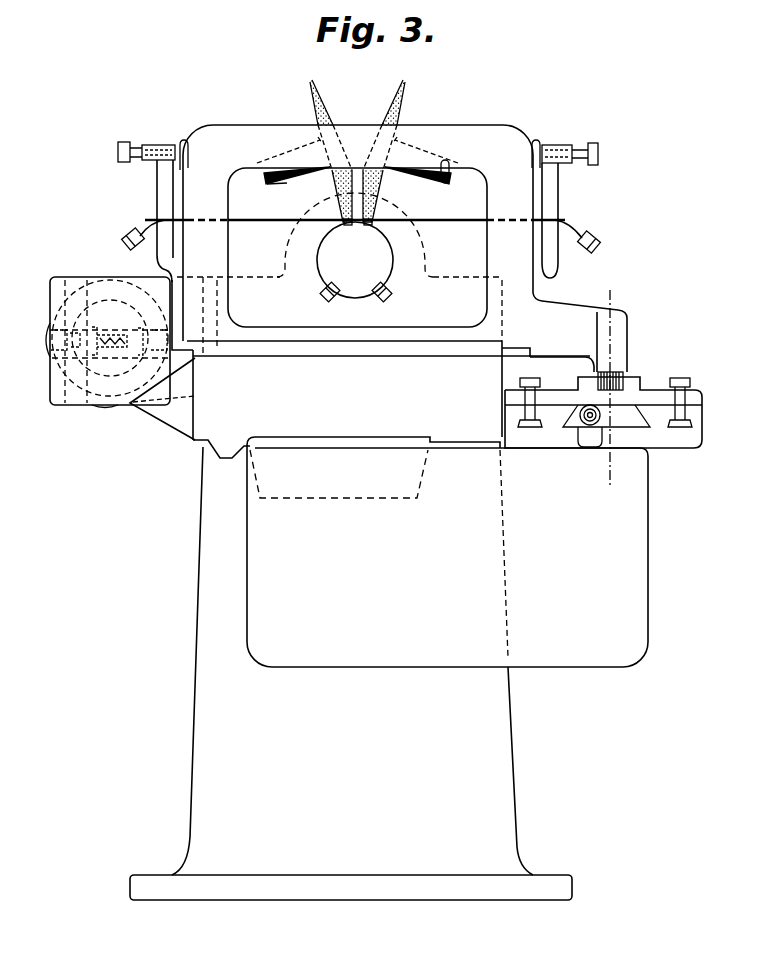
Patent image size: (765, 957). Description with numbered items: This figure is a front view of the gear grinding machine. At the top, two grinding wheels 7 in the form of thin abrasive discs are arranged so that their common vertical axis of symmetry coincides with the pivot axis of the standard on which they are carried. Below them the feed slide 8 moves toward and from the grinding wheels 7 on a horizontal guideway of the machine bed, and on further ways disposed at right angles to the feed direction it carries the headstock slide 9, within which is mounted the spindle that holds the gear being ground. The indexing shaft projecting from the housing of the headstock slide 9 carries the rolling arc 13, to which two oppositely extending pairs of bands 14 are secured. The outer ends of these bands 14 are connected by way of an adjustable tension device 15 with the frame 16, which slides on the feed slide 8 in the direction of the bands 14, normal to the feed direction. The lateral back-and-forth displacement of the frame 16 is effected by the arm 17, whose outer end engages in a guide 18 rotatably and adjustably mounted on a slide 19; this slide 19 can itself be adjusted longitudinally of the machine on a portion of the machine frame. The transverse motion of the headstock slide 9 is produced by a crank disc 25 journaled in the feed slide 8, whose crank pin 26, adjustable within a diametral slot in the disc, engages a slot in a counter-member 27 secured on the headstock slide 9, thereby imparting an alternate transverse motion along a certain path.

The grinding wheels 7 is at (383, 115).
The feed slide 8 is at (215, 433).
The headstock slide 9 is at (307, 213).
The rolling arc 13 is at (393, 277).
The bands 14 is at (268, 222).
The adjustable tension device 15 is at (162, 198).
The frame 16 is at (258, 138).
The arm 17 is at (620, 313).
The guide 18 is at (648, 397).
The slide 19 is at (640, 427).
The crank disc 25 is at (103, 403).
The crank pin 26 is at (50, 362).
The counter-member 27 is at (58, 285).